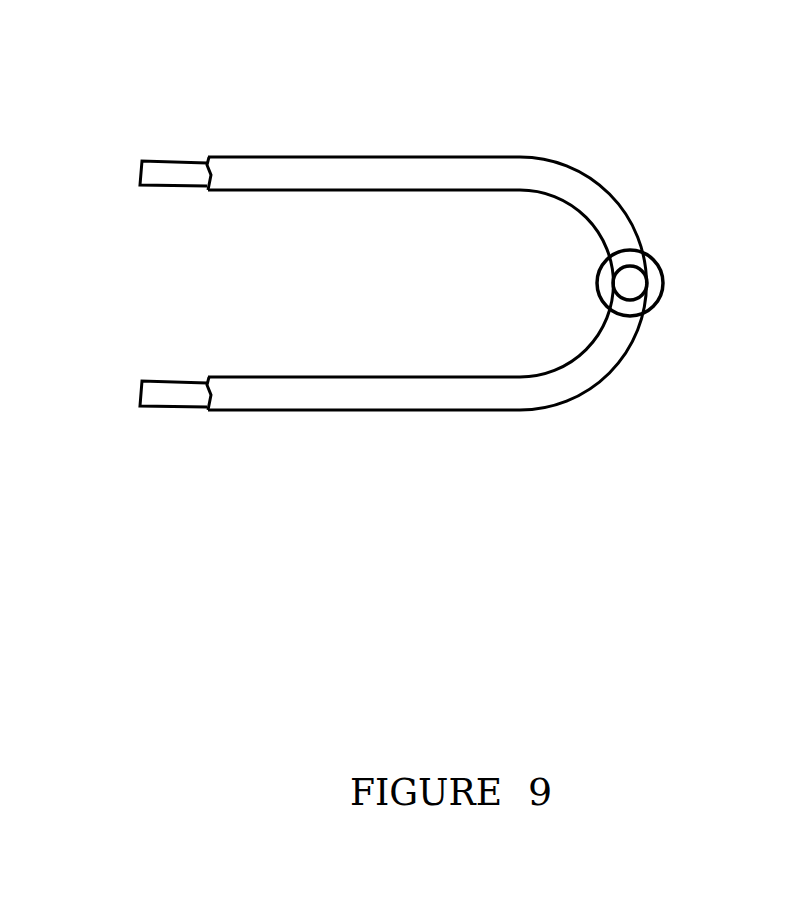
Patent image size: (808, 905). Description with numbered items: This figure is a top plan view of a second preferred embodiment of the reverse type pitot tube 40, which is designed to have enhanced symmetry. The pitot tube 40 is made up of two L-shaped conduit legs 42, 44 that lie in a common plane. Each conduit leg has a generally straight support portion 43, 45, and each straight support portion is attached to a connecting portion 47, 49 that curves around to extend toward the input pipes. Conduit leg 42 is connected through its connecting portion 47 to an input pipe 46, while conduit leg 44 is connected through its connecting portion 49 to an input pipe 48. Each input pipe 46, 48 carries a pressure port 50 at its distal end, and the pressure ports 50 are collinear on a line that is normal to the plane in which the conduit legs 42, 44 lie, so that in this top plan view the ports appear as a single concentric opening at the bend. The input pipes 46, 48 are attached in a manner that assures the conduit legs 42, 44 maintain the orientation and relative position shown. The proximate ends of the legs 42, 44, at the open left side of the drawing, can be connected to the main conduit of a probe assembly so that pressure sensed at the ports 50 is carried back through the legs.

The pitot tube 40 is at (472, 286).
The L-shaped conduit leg 42 is at (502, 157).
The straight support portion 43 is at (310, 190).
The L-shaped conduit leg 44 is at (502, 410).
The straight support portion 45 is at (320, 377).
The input pipe 46 is at (652, 247).
The connecting portion 47 is at (611, 167).
The input pipe 48 is at (655, 303).
The connecting portion 49 is at (607, 398).
The pressure port 50 is at (628, 283).